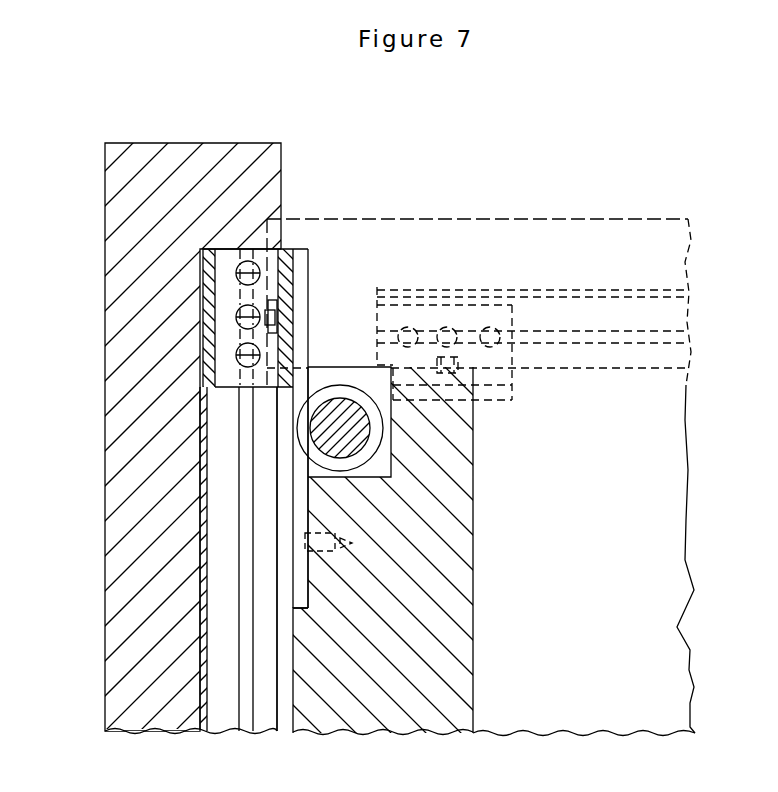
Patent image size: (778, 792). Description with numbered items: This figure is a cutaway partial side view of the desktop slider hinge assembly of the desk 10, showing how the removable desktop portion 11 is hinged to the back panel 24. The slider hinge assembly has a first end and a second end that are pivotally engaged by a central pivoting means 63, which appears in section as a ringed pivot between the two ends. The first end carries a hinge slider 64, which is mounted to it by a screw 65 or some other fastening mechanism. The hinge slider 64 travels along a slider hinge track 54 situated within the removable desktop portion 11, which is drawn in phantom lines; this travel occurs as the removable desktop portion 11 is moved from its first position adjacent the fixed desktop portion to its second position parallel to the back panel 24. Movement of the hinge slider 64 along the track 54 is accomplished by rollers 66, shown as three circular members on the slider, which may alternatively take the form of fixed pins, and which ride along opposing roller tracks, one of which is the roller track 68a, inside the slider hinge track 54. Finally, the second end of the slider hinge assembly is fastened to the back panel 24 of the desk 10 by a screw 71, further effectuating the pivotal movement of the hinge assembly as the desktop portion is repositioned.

The desk 10 is at (127, 450).
The removable desktop portion 11 is at (593, 250).
The back panel 24 is at (452, 603).
The slider hinge track 54 is at (223, 705).
The central pivoting means 63 is at (390, 453).
The hinge slider 64 is at (227, 268).
The screw 65 is at (290, 318).
The rollers 66 is at (247, 355).
The roller track 68a is at (238, 710).
The screw 71 is at (330, 535).